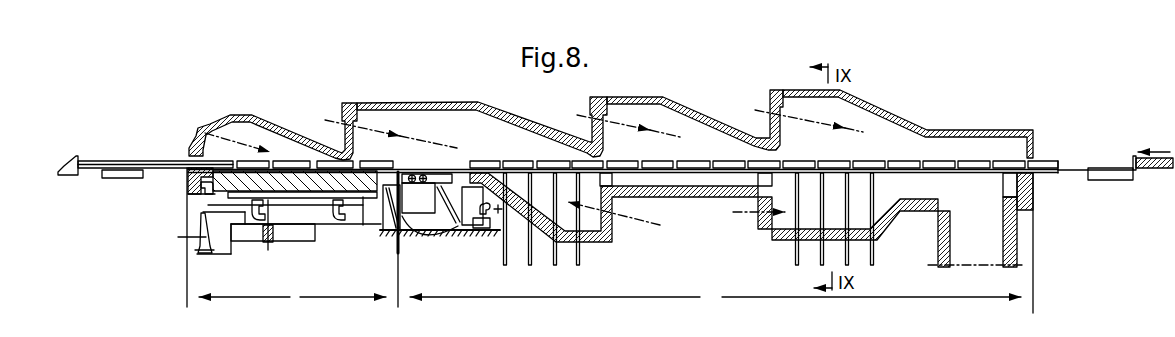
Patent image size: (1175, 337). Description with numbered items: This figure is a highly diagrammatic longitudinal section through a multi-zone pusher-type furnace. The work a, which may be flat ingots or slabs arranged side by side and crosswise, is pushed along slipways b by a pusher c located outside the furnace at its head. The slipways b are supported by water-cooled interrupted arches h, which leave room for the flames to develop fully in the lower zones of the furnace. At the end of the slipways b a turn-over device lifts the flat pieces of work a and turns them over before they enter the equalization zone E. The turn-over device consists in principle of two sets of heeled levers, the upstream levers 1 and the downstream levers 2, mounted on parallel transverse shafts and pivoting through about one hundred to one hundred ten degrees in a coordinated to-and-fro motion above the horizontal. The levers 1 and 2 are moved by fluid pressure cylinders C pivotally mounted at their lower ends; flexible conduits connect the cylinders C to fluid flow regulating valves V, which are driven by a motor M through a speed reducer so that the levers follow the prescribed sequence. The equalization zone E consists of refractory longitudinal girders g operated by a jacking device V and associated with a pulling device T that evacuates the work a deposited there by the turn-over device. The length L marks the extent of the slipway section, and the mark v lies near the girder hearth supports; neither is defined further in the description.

The work a is at (380, 166).
The slipways b is at (688, 173).
The pusher c is at (1163, 168).
The refractory longitudinal girders g is at (330, 184).
The water-cooled interrupted arches h is at (780, 240).
The pulling device T is at (88, 168).
The fluid pressure cylinders C is at (387, 207).
The fluid flow regulating valves V is at (473, 232).
The motor M is at (497, 227).
The pin v is at (273, 240).
The upstream levers 1 is at (437, 173).
The downstream levers 2 is at (408, 172).
The equalization zone E is at (292, 237).
The treatment section length L is at (721, 243).